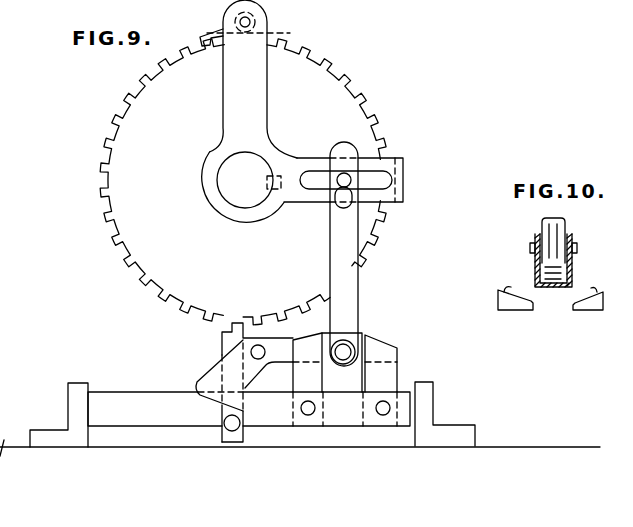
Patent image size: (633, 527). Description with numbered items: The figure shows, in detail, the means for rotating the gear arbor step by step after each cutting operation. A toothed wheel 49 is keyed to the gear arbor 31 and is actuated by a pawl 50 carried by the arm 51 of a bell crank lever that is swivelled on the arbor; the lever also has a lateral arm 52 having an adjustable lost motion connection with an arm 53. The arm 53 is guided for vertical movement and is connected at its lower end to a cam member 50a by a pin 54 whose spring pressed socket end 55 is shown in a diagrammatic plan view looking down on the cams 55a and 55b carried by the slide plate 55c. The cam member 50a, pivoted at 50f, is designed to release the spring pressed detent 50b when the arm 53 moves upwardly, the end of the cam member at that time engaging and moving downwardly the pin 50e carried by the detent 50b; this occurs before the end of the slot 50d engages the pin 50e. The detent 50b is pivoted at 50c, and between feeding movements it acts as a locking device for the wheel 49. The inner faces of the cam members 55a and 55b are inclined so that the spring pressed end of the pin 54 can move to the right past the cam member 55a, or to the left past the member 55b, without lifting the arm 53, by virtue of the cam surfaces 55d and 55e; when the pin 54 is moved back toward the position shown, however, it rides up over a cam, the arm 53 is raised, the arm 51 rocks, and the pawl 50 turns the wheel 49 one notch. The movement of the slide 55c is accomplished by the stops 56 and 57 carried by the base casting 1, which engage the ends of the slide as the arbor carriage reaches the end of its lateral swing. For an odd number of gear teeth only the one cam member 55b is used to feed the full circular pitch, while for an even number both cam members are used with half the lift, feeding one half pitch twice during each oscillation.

In FIG. 9, the base casting 1 is at (515, 446).
In FIG. 9, the gear arbor 31 is at (227, 170).
In FIG. 9, the toothed wheel 49 is at (117, 108).
In FIG. 9, the pawl 50 is at (220, 30).
In FIG. 9, the cam member 50a is at (210, 377).
In FIG. 9, the spring pressed detent 50b is at (220, 330).
In FIG. 9, the pawl pivot 50c is at (230, 425).
In FIG. 9, the slot 50d is at (343, 208).
In FIG. 9, the pin 50e is at (350, 177).
In FIG. 9, the pivot 50f is at (255, 346).
In FIG. 9, the arm 51 is at (258, 110).
In FIG. 9, the lateral arm 52 is at (380, 193).
In FIG. 9, the arm 53 is at (343, 257).
In FIG. 9, the pin 54 is at (347, 349).
In FIG. 10, the pin 54 is at (545, 232).
In FIG. 10, the spring pressed socket end 55 is at (537, 270).
In FIG. 9, the cam member 55a is at (383, 348).
In FIG. 10, the cam member 55a is at (592, 311).
In FIG. 9, the cam member 55b is at (313, 338).
In FIG. 10, the cam member 55b is at (512, 311).
In FIG. 9, the slide plate 55c is at (150, 415).
In FIG. 10, the cam surface 55d is at (503, 289).
In FIG. 10, the cam surface 55e is at (595, 292).
In FIG. 9, the stop 56 is at (72, 398).
In FIG. 9, the stop 57 is at (427, 398).